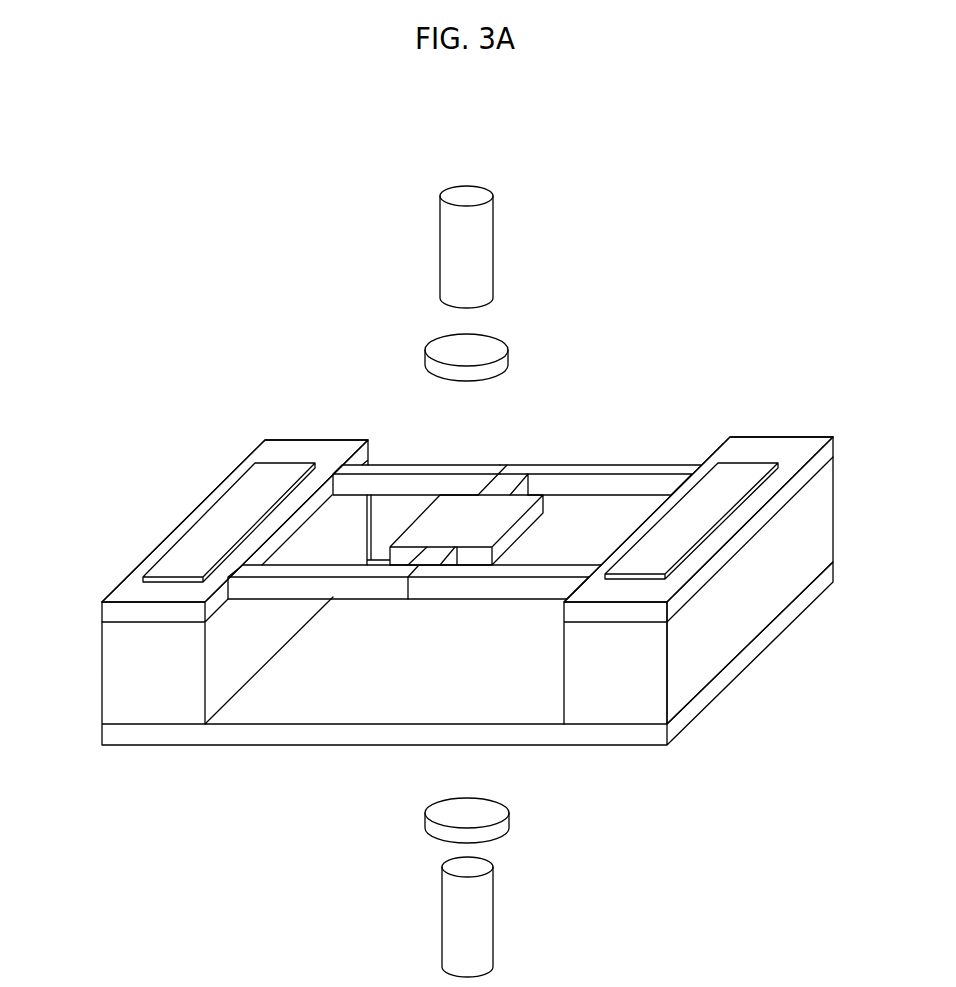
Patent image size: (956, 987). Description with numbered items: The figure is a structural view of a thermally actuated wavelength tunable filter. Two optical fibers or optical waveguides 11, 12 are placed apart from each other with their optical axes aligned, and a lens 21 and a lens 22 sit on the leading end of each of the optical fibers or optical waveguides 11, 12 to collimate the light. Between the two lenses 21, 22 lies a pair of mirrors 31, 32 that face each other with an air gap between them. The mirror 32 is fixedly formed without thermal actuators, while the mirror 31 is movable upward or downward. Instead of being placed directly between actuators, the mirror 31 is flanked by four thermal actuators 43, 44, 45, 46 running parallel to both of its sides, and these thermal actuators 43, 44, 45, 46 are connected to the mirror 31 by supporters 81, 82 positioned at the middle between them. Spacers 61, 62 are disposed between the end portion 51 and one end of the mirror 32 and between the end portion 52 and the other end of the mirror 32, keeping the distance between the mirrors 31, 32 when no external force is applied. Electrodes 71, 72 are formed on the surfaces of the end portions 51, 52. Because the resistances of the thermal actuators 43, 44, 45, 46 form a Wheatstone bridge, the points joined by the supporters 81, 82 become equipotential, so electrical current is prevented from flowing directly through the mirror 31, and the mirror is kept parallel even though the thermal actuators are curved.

The optical fiber or optical waveguide 11 is at (485, 260).
The optical fiber or optical waveguide 12 is at (485, 908).
The lens 21 is at (493, 343).
The lens 22 is at (507, 823).
The mirror 31 is at (452, 510).
The mirror 32 is at (237, 737).
The thermal actuator 43 is at (407, 481).
The thermal actuator 44 is at (597, 482).
The thermal actuator 45 is at (303, 590).
The thermal actuator 46 is at (510, 588).
The end portion 51 is at (285, 446).
The end portion 52 is at (807, 450).
The spacer 61 is at (108, 658).
The spacer 62 is at (820, 488).
The electrode 71 is at (212, 522).
The electrode 72 is at (740, 477).
The supporter 81 is at (502, 478).
The supporter 82 is at (432, 562).